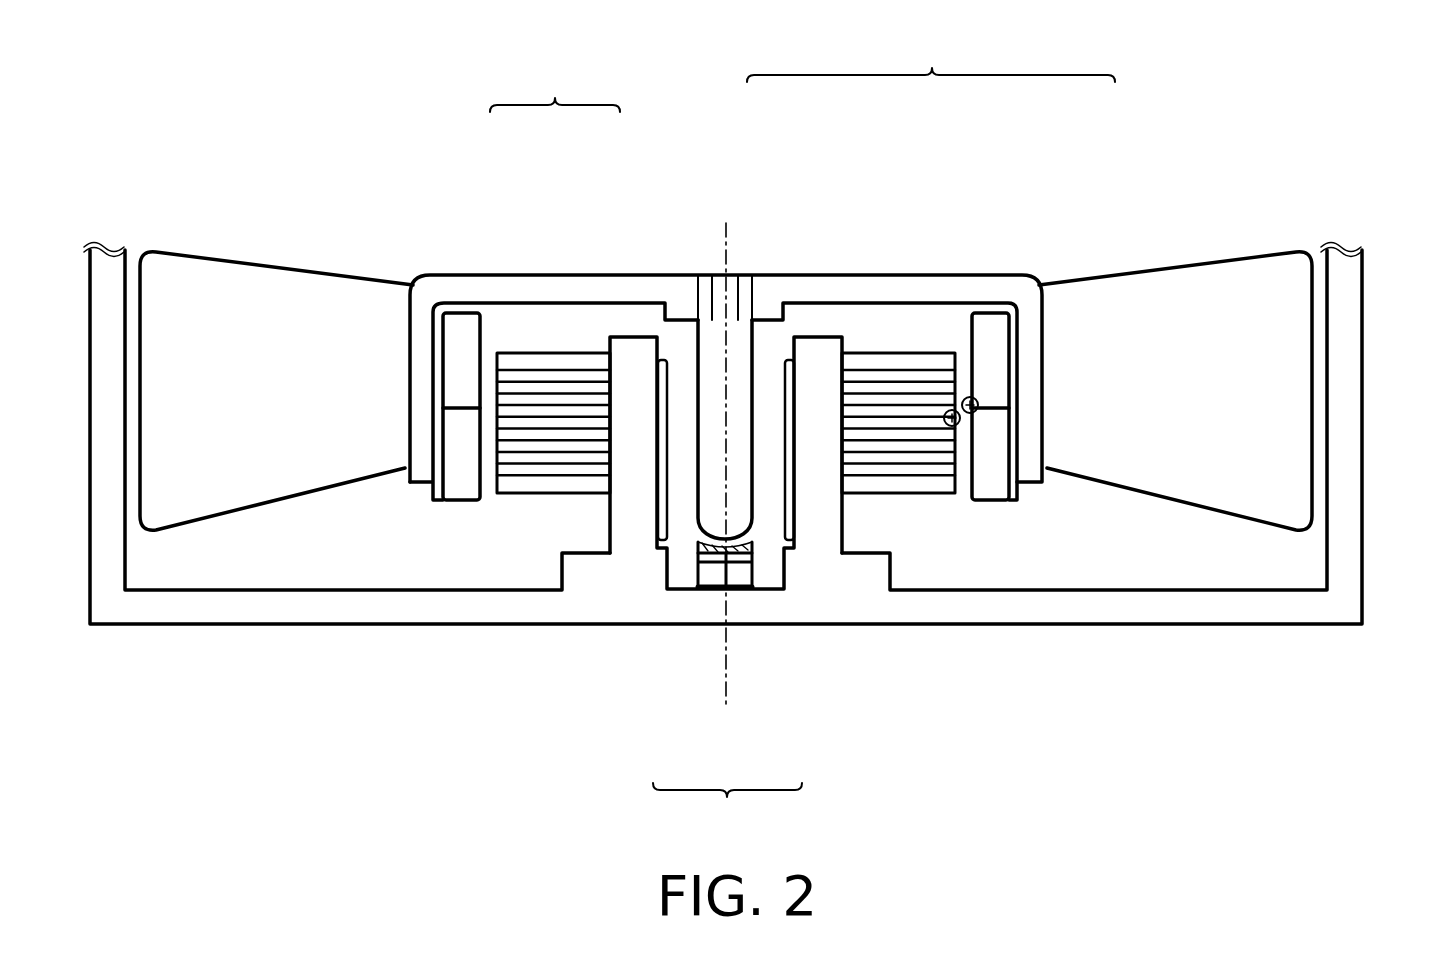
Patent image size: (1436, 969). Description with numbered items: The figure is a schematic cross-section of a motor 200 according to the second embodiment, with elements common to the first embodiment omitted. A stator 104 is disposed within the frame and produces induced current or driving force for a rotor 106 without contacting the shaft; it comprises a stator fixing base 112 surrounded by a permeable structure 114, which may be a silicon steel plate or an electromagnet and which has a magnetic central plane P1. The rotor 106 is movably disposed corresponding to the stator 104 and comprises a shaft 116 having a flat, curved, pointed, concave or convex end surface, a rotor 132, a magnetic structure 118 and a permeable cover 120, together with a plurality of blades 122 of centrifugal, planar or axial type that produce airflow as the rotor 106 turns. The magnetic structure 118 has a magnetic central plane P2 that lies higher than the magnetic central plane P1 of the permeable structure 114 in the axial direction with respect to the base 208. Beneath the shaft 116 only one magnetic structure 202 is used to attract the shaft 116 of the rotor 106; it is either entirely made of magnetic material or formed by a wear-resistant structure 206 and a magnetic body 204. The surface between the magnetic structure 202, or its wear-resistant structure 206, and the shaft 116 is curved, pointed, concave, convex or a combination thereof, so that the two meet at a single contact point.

The motor 200 is at (183, 92).
The stator 104 is at (555, 87).
The rotor 106 is at (931, 56).
The stator fixing base 112 is at (627, 358).
The permeable structure 114 is at (547, 372).
The shaft 116 is at (746, 330).
The magnetic structure 118 is at (982, 330).
The permeable cover 120 is at (1000, 305).
The blades 122 is at (1112, 300).
The rotor 132 is at (868, 292).
The magnetic structure 202 is at (727, 808).
The magnetic body 204 is at (708, 587).
The wear-resistant structure 206 is at (745, 587).
The base 208 is at (1269, 608).
The magnetic central plane P1 is at (965, 437).
The magnetic central plane P2 is at (987, 388).